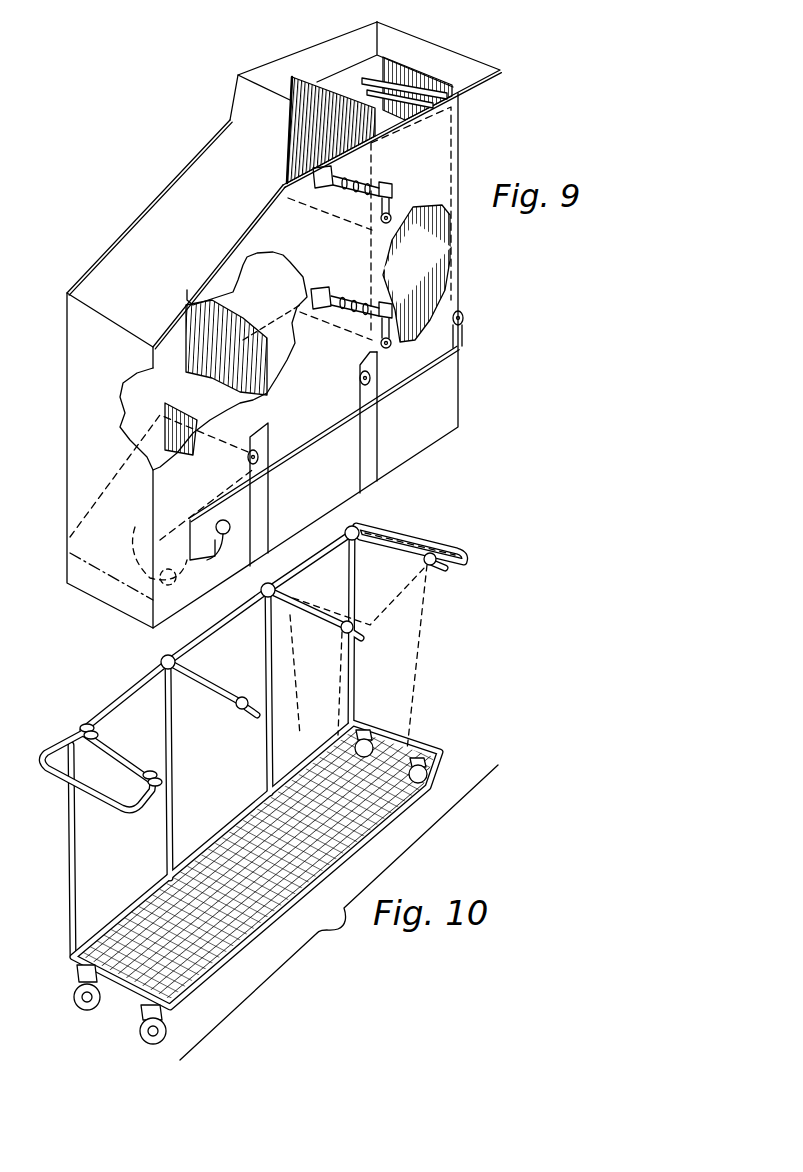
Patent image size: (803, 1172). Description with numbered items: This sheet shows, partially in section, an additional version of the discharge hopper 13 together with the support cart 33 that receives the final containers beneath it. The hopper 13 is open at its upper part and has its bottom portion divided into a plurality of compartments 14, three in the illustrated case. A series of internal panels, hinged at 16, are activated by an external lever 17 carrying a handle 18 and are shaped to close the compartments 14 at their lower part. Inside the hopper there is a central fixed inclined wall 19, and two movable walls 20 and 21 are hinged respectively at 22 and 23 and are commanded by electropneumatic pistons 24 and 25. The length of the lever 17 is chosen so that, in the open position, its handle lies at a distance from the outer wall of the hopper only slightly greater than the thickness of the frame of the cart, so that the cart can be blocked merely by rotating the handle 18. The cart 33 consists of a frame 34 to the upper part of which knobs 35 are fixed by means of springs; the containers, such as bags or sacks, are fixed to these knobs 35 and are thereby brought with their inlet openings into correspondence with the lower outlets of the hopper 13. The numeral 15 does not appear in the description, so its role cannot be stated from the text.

In FIG. 9, the discharge hopper 13 is at (468, 403).
In FIG. 9, the compartments 14 is at (410, 460).
In FIG. 9, the hidden bin outline 15 is at (98, 533).
In FIG. 9, the hinges 16 is at (463, 313).
In FIG. 9, the lever 17 is at (440, 368).
In FIG. 9, the handle 18 is at (190, 545).
In FIG. 9, the central fixed inclined wall 19 is at (220, 260).
In FIG. 9, the movable wall 20 is at (376, 145).
In FIG. 9, the movable wall 21 is at (380, 277).
In FIG. 9, the hinge 22 is at (393, 216).
In FIG. 9, the hinge 23 is at (386, 348).
In FIG. 9, the electropneumatic piston 24 is at (352, 190).
In FIG. 9, the electropneumatic piston 25 is at (358, 300).
In FIG. 10, the cart 33 is at (436, 656).
In FIG. 10, the frame 34 is at (72, 892).
In FIG. 10, the knobs 35 is at (185, 660).